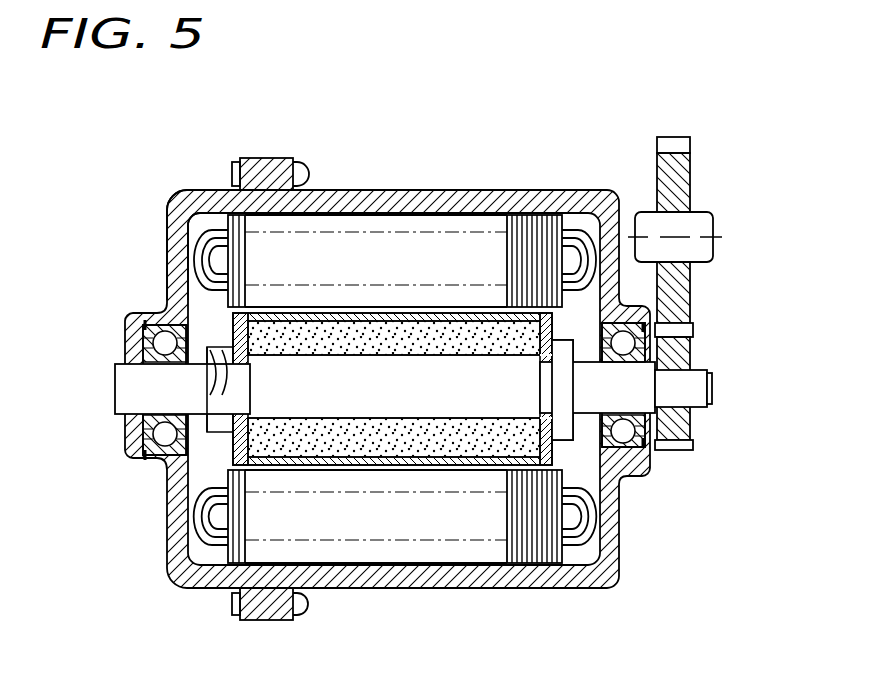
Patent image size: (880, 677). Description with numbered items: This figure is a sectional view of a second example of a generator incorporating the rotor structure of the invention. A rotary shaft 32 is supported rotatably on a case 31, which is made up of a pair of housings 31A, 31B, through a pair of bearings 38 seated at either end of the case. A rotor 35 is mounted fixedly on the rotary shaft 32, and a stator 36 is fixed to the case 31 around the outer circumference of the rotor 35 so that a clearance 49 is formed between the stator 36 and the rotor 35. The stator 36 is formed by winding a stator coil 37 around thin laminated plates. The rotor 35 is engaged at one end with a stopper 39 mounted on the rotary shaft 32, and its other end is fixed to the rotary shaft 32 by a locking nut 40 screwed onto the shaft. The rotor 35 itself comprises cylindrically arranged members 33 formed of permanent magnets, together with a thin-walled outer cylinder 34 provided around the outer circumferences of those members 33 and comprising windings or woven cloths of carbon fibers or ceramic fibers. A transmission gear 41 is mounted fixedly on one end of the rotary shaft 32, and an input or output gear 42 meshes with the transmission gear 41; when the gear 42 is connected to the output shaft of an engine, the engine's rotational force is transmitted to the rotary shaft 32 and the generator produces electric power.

The case 31 is at (404, 188).
The housing 31A is at (461, 207).
The housing 31B is at (210, 203).
The rotary shaft 32 is at (140, 387).
The cylindrically arranged members 33 is at (339, 337).
The thin-walled outer cylinder 34 is at (384, 314).
The rotor 35 is at (360, 473).
The stator 36 is at (352, 253).
The stator coil 37 is at (210, 257).
The bearings 38 is at (140, 325).
The stopper 39 is at (558, 360).
The locking nut 40 is at (225, 360).
The transmission gear 41 is at (680, 352).
The input or output gear 42 is at (677, 173).
The clearance 49 is at (470, 313).